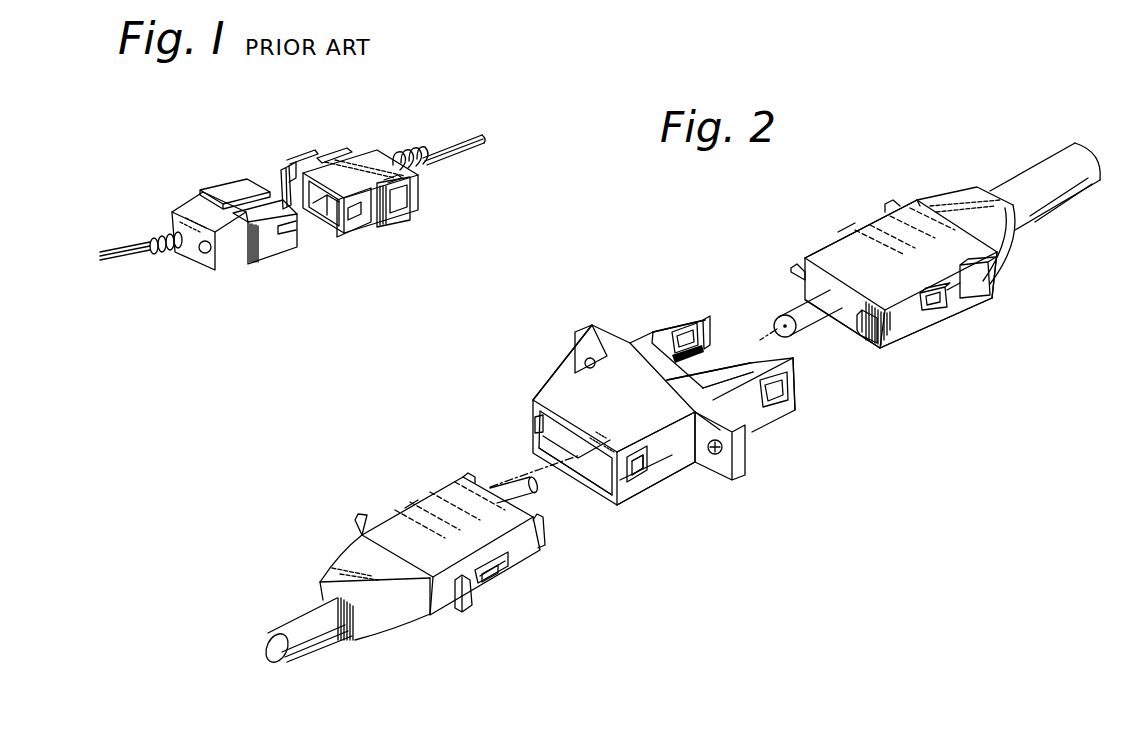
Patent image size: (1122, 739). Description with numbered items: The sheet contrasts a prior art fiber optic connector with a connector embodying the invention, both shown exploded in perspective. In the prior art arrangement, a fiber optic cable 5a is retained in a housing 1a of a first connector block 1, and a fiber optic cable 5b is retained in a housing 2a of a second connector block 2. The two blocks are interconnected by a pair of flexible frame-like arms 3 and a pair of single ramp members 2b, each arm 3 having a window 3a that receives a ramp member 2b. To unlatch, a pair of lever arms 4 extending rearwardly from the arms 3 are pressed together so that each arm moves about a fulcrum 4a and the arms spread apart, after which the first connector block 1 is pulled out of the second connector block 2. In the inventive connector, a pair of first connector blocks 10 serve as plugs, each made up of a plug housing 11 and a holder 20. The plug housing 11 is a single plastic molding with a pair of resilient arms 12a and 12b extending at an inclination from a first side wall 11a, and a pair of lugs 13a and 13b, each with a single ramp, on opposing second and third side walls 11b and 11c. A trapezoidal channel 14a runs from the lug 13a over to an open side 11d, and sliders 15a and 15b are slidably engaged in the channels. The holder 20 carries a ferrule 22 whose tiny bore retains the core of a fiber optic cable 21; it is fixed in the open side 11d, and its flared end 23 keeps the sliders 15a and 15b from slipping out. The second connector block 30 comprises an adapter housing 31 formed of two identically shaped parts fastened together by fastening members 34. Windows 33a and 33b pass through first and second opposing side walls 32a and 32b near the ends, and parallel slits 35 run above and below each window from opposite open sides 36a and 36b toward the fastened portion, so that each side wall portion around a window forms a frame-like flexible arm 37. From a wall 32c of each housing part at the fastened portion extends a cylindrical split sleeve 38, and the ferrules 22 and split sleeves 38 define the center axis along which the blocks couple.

In FIG. 1, the first connector block 1 is at (362, 143).
In FIG. 1, the housing 1a is at (394, 158).
In FIG. 1, the second connector block 2 is at (206, 186).
In FIG. 1, the housing 2a is at (257, 265).
In FIG. 1, the single ramp member 2b is at (298, 250).
In FIG. 1, the flexible frame-like arm 3 is at (284, 170).
In FIG. 1, the window 3a is at (296, 168).
In FIG. 1, the lever arm 4 is at (345, 152).
In FIG. 1, the fulcrum 4a is at (312, 153).
In FIG. 1, the fiber optic cable 5a is at (468, 137).
In FIG. 1, the fiber optic cable 5b is at (128, 242).
In FIG. 2, the first connector block 10 is at (869, 185).
In FIG. 2, the plug housing 11 is at (870, 233).
In FIG. 2, the first side wall 11a is at (888, 335).
In FIG. 2, the second side wall 11b is at (912, 327).
In FIG. 2, the third side wall 11c is at (823, 249).
In FIG. 2, the open side 11d is at (1005, 245).
In FIG. 2, the resilient arm 12a is at (870, 343).
In FIG. 2, the resilient arm 12b is at (793, 273).
In FIG. 2, the lug 13a is at (930, 308).
In FIG. 2, the lug 13b is at (848, 231).
In FIG. 2, the channel 14a is at (953, 304).
In FIG. 2, the slider 15a is at (988, 300).
In FIG. 2, the slider 15b is at (888, 202).
In FIG. 2, the holder 20 is at (965, 197).
In FIG. 2, the fiber optic cable 21 is at (1042, 165).
In FIG. 2, the ferrule 22 is at (787, 313).
In FIG. 2, the flared end 23 is at (920, 202).
In FIG. 2, the second connector block 30 is at (626, 268).
In FIG. 2, the adapter housing 31 is at (618, 276).
In FIG. 2, the first side wall 32a is at (687, 462).
In FIG. 2, the second side wall 32b is at (643, 337).
In FIG. 2, the wall 32c is at (660, 335).
In FIG. 2, the window 33a is at (637, 470).
In FIG. 2, the window 33b is at (681, 335).
In FIG. 2, the fastening member 34 is at (585, 360).
In FIG. 2, the parallel slit 35 is at (700, 357).
In FIG. 2, the open side 36a is at (745, 340).
In FIG. 2, the open side 36b is at (605, 478).
In FIG. 2, the flexible arm 37 is at (696, 325).
In FIG. 2, the split sleeve 38 is at (770, 400).